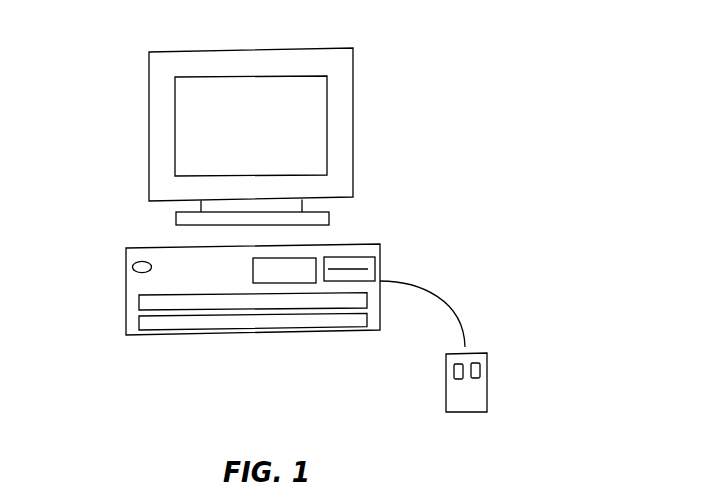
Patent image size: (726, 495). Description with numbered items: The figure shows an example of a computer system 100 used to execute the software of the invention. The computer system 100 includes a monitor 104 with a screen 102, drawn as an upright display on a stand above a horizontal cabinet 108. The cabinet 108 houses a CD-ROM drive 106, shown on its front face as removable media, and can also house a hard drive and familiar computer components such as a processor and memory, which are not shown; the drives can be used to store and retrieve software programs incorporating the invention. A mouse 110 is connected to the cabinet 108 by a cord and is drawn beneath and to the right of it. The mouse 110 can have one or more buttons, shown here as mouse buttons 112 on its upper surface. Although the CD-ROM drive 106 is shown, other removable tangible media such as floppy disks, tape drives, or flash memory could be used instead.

The computer system 100 is at (531, 43).
The screen 102 is at (205, 100).
The monitor 104 is at (353, 135).
The CD-ROM drive 106 is at (355, 260).
The cabinet 108 is at (142, 248).
The mouse 110 is at (447, 411).
The mouse buttons 112 is at (458, 380).